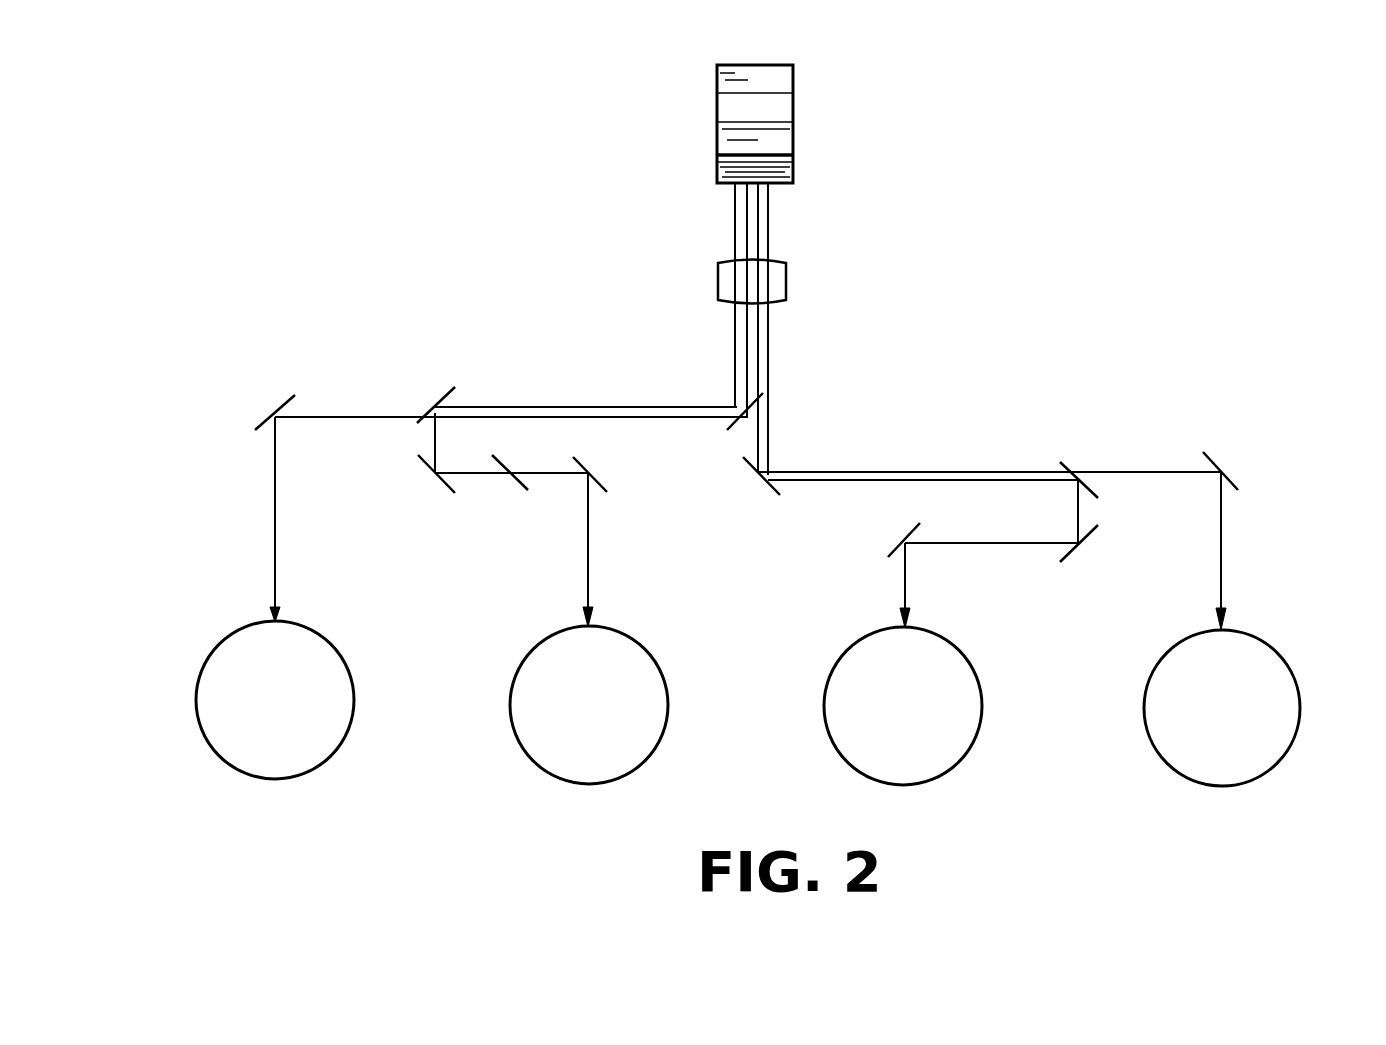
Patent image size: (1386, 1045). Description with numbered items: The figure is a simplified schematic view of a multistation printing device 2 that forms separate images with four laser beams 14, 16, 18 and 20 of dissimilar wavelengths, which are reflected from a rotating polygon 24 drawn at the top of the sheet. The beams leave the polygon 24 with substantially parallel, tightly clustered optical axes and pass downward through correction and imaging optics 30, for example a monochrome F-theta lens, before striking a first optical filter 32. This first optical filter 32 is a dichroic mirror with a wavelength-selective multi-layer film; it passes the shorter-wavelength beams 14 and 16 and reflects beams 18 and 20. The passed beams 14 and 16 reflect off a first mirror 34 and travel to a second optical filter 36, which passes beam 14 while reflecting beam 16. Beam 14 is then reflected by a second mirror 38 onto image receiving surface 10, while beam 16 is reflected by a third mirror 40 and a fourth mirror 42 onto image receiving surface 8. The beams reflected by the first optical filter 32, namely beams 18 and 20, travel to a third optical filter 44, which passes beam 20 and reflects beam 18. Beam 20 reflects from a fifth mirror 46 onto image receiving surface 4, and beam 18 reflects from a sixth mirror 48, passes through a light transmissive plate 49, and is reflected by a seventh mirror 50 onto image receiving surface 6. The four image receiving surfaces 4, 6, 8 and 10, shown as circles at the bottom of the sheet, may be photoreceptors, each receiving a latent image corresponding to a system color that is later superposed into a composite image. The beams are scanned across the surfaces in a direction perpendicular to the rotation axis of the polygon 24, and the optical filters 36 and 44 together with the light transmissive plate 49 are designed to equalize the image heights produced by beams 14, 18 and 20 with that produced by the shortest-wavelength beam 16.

The multistation printing device 2 is at (1085, 160).
The image receiving surface 4 is at (330, 690).
The image receiving surface 6 is at (645, 682).
The image receiving surface 8 is at (958, 688).
The image receiving surface 10 is at (1280, 693).
The laser beam 14 is at (760, 370).
The laser beam 16 is at (768, 345).
The laser beam 18 is at (745, 333).
The laser beam 20 is at (735, 368).
The rotating polygon 24 is at (775, 75).
The correction and imaging optics 30 is at (787, 282).
The first optical filter 32 is at (768, 413).
The first mirror 34 is at (746, 499).
The second optical filter 36 is at (1062, 462).
The second mirror 38 is at (1215, 460).
The third mirror 40 is at (1095, 530).
The fourth mirror 42 is at (893, 553).
The third optical filter 44 is at (450, 385).
The fifth mirror 46 is at (293, 392).
The sixth mirror 48 is at (452, 492).
The light transmissive plate 49 is at (522, 490).
The seventh mirror 50 is at (598, 478).